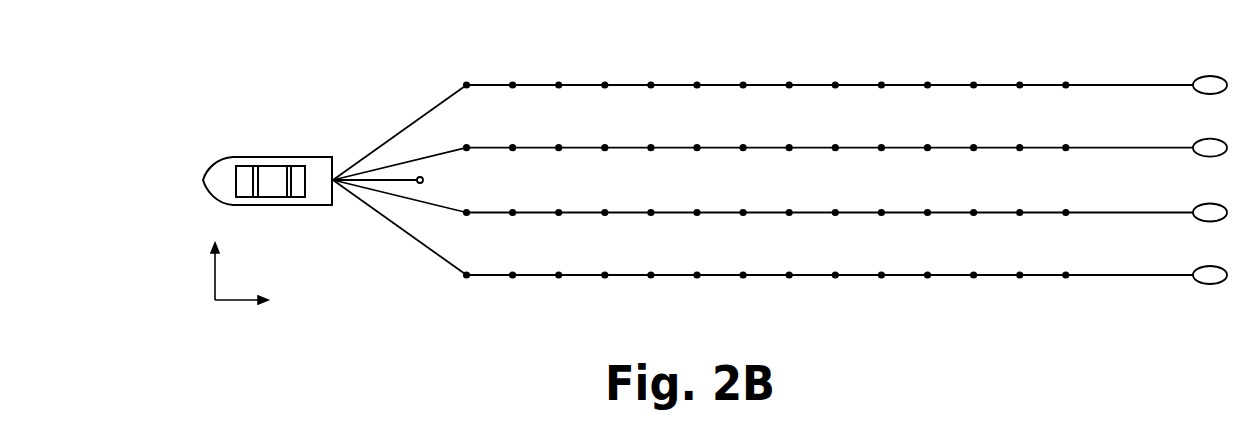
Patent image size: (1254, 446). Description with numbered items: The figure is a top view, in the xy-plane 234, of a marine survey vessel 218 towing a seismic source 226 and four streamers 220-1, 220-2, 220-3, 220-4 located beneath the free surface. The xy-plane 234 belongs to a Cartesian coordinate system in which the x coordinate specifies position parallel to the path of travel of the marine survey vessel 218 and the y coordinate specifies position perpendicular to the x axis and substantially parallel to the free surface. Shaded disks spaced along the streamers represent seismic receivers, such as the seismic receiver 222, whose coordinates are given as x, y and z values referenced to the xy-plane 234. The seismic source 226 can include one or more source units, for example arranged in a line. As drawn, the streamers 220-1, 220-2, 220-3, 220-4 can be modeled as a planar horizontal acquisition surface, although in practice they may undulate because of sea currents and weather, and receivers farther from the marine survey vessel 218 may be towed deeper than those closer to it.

The marine survey vessel 218 is at (249, 157).
The seismic source 226 is at (417, 178).
The seismic receiver 222 is at (465, 83).
The streamer 220-1 is at (992, 85).
The streamer 220-2 is at (992, 148).
The streamer 220-3 is at (992, 212).
The streamer 220-4 is at (992, 275).
The xy-plane 234 is at (227, 287).